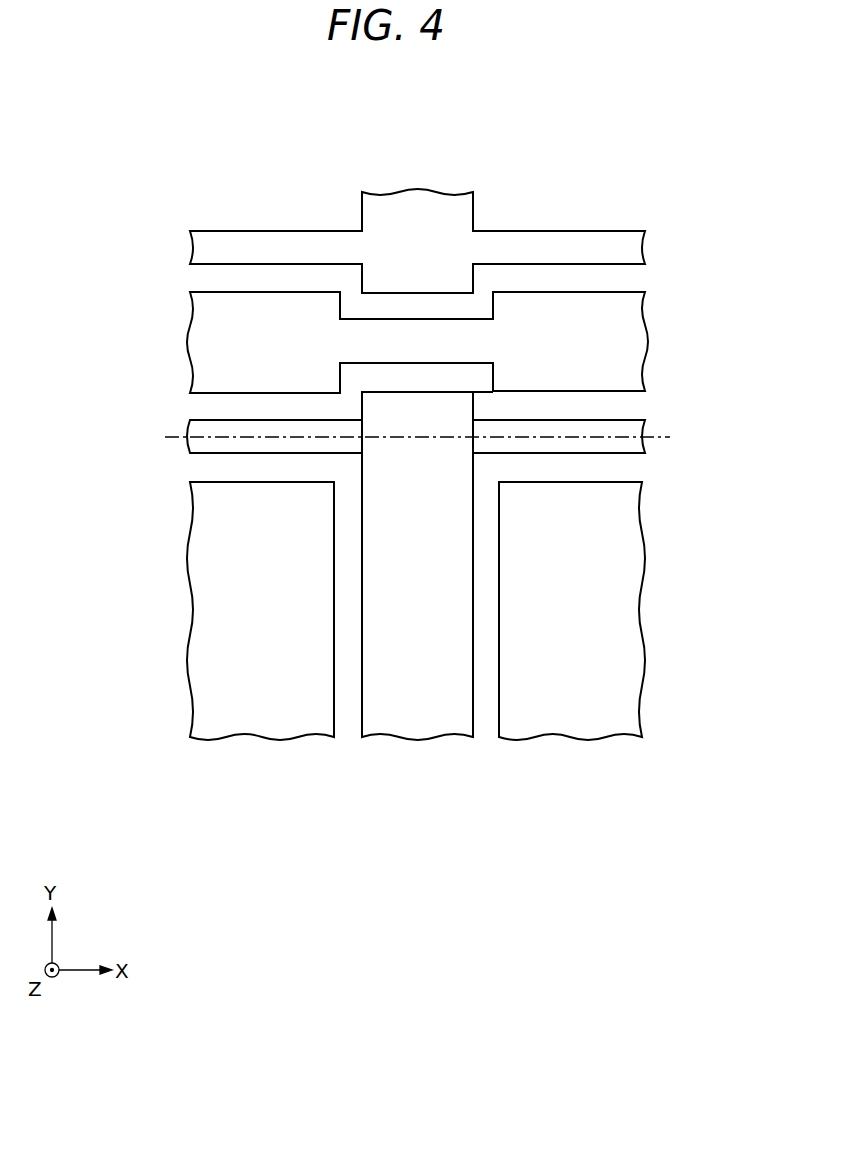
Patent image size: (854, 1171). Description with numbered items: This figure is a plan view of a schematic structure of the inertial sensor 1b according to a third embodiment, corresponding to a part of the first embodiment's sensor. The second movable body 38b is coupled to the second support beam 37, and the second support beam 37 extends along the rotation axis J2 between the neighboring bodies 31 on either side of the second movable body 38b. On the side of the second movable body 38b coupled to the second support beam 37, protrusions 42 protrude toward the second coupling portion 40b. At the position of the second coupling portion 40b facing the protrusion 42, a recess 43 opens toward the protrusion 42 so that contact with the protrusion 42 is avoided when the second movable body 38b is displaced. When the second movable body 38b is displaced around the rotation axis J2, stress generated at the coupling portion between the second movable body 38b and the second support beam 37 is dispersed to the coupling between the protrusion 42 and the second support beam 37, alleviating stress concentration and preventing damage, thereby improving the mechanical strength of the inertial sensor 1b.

The inertial sensor 1b is at (690, 138).
The second coupling portion 40b is at (627, 342).
The recess 43 is at (362, 365).
The protrusion 42 is at (476, 405).
The second movable body 38b is at (419, 722).
The second support beam 37 is at (627, 442).
The rotation axis J2 is at (173, 437).
The electrode 31 is at (205, 622).